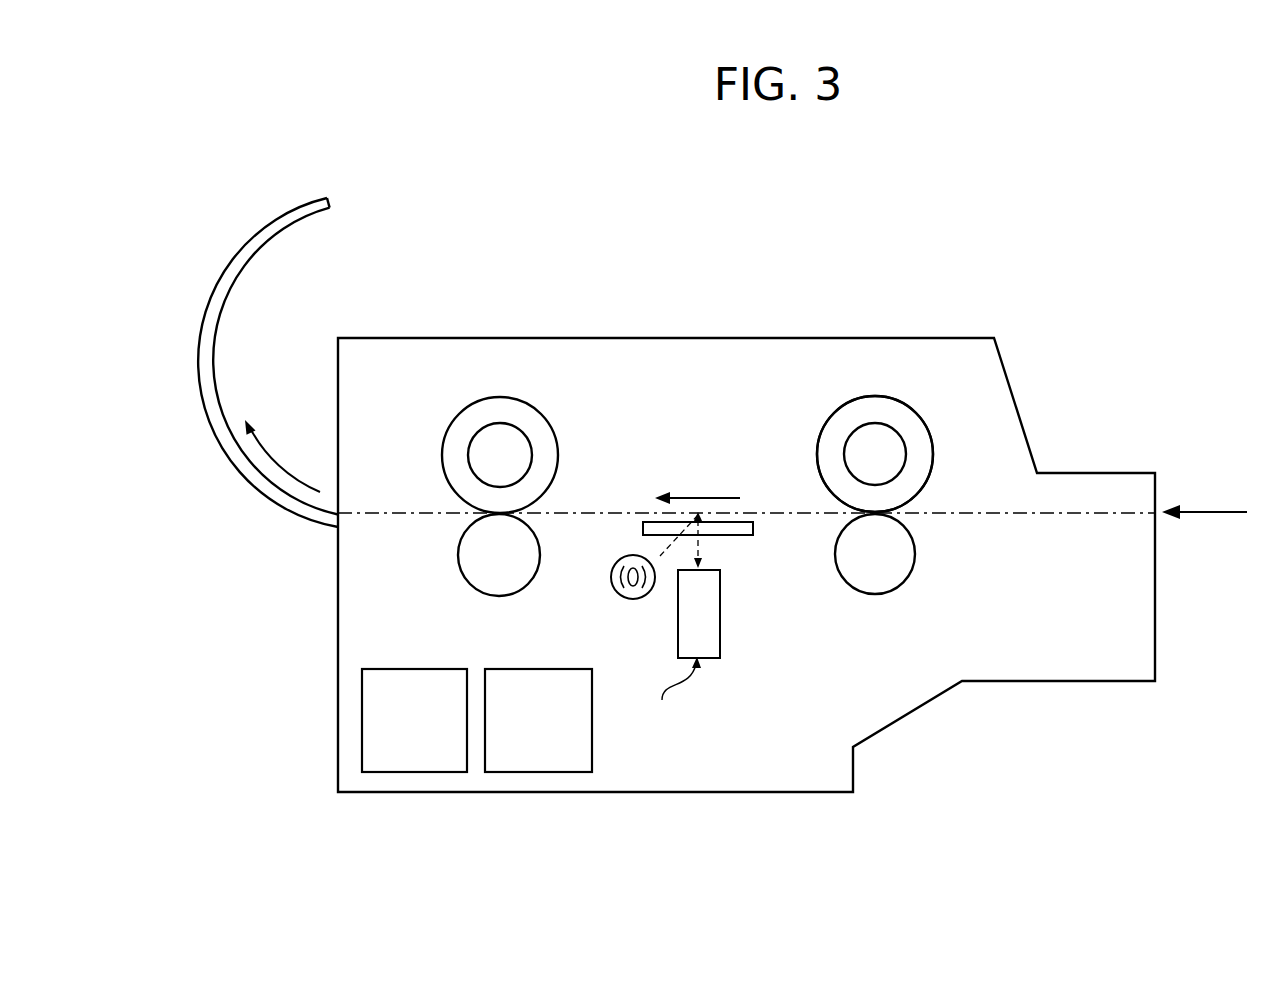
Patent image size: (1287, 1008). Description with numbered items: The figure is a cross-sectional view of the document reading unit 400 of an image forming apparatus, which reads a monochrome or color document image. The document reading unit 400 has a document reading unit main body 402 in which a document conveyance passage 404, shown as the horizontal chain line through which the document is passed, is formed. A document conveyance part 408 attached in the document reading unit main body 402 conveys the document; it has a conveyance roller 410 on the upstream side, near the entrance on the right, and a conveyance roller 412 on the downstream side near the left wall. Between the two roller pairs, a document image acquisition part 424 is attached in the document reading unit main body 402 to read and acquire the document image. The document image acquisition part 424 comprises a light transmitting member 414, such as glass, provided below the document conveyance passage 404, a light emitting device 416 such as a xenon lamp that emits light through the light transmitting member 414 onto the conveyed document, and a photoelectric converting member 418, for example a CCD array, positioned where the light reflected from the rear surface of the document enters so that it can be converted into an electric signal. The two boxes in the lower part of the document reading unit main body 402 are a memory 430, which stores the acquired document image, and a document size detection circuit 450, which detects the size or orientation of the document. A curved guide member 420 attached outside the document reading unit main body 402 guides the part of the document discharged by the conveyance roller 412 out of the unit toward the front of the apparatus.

The document reading unit 400 is at (746, 513).
The document reading unit main body 402 is at (857, 338).
The document conveyance passage 404 is at (990, 514).
The document conveyance part 408 is at (903, 396).
The conveyance roller 410 is at (828, 417).
The conveyance roller 412 is at (452, 417).
The light transmitting member 414 is at (735, 532).
The light emitting device 416 is at (618, 598).
The photoelectric converting member 418 is at (720, 640).
The guide member 420 is at (303, 200).
The document image acquisition part 424 is at (672, 693).
The memory 430 is at (414, 758).
The document size detection circuit 450 is at (541, 758).